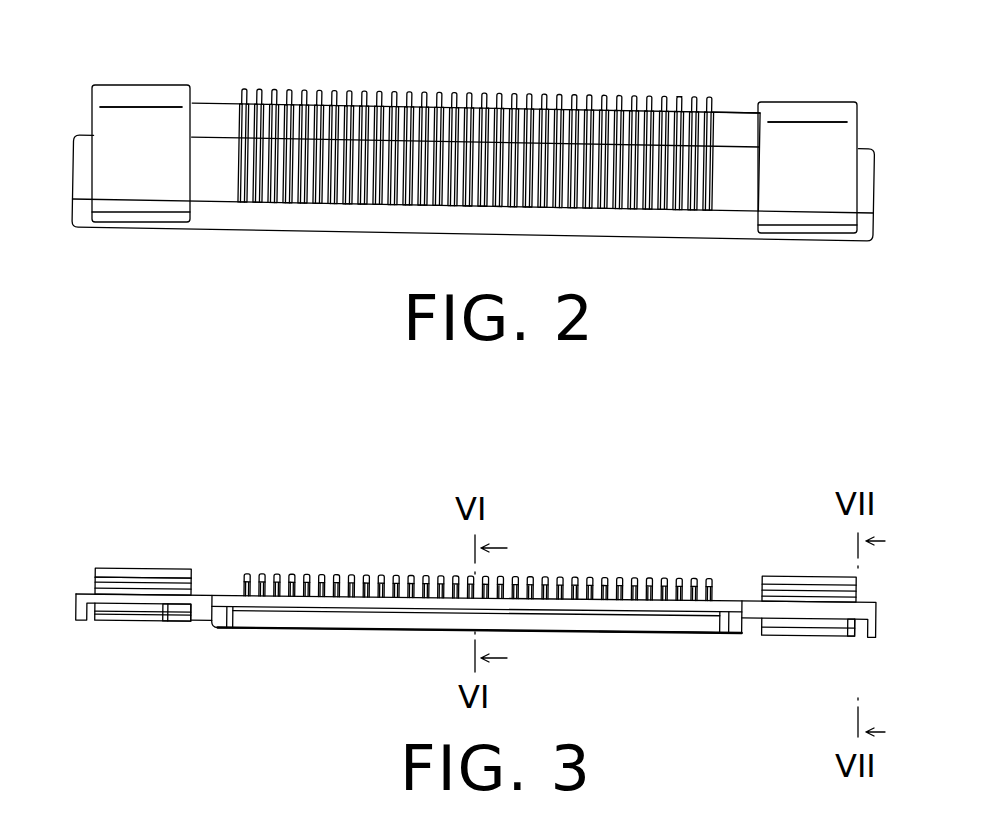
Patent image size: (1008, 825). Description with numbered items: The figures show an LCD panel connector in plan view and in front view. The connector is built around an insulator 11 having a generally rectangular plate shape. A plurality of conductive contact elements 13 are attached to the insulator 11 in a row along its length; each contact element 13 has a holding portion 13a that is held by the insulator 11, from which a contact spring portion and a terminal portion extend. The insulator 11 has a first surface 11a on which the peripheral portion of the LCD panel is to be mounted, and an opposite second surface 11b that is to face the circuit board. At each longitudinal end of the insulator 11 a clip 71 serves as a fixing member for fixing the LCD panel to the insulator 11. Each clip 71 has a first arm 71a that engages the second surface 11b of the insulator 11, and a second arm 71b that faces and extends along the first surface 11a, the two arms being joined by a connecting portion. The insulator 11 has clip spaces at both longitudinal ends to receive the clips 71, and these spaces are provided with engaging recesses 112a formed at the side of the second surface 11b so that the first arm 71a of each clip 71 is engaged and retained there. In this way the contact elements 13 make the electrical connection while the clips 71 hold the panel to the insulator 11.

In FIG. 2, the insulator 11 is at (529, 218).
In FIG. 3, the insulator 11 is at (372, 618).
In FIG. 2, the first surface 11a is at (736, 194).
In FIG. 3, the second surface 11b is at (665, 640).
In FIG. 2, the conductive contact element 13 is at (478, 90).
In FIG. 3, the conductive contact element 13 is at (712, 576).
In FIG. 2, the holding portion 13a is at (679, 100).
In FIG. 2, the clip 71 is at (159, 86).
In FIG. 3, the clip 71 is at (157, 569).
In FIG. 3, the first arm 71a is at (117, 628).
In FIG. 2, the second arm 71b is at (97, 120).
In FIG. 3, the second arm 71b is at (132, 575).
In FIG. 3, the engaging recess 112a is at (165, 628).